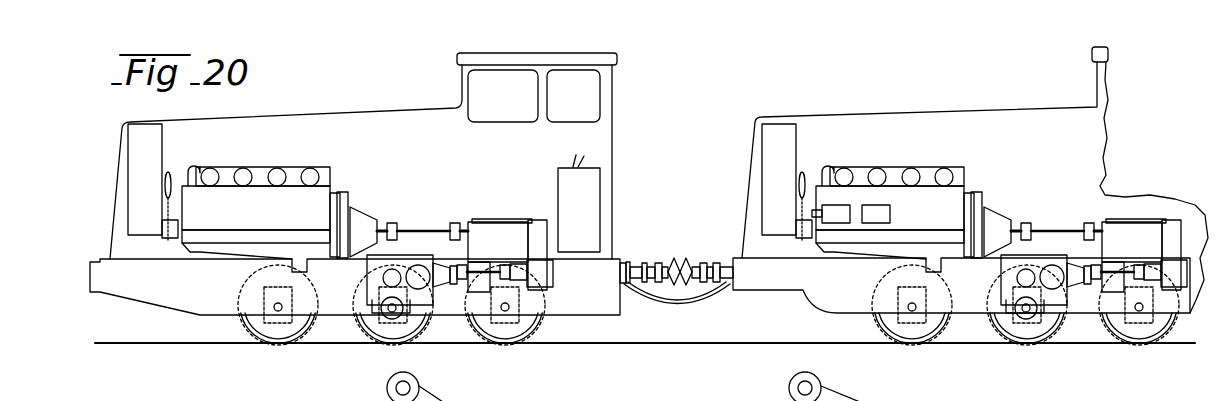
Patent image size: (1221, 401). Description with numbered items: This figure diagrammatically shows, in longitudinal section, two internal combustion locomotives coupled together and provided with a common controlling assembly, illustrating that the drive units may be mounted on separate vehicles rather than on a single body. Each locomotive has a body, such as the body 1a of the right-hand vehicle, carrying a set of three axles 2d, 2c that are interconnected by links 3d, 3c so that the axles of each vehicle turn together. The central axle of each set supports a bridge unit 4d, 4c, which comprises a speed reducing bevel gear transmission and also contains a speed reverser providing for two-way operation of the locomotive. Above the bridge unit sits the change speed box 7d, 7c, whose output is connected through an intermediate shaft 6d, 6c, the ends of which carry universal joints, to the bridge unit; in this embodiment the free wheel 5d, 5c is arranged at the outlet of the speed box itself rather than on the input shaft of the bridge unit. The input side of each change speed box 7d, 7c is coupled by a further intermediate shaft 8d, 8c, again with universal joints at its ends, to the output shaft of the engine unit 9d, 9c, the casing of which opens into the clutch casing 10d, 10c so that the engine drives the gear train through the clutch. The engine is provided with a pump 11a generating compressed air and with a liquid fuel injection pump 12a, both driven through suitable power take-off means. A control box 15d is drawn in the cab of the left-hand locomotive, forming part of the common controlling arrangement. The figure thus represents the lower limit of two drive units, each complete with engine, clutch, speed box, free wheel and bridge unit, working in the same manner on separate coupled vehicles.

The locomotive body 1a is at (832, 288).
The axles 2d is at (540, 333).
The axles 2c is at (878, 331).
The links 3d is at (336, 318).
The links 3c is at (1083, 316).
The bridge unit 4d is at (376, 274).
The bridge unit 4c is at (1007, 273).
The free wheel 5d is at (541, 262).
The free wheel 5c is at (1152, 283).
The intermediate shaft 6d is at (487, 268).
The intermediate shaft 6c is at (1127, 267).
The change speed box 7d is at (525, 250).
The change speed box 7c is at (1162, 250).
The intermediate shaft 8d is at (420, 227).
The intermediate shaft 8c is at (1060, 227).
The engine unit 9d is at (253, 193).
The engine unit 9c is at (943, 205).
The clutch casing 10d is at (348, 200).
The clutch casing 10c is at (978, 197).
The pump 11a is at (837, 216).
The liquid fuel injection pump 12a is at (878, 213).
The control box 15d is at (566, 168).